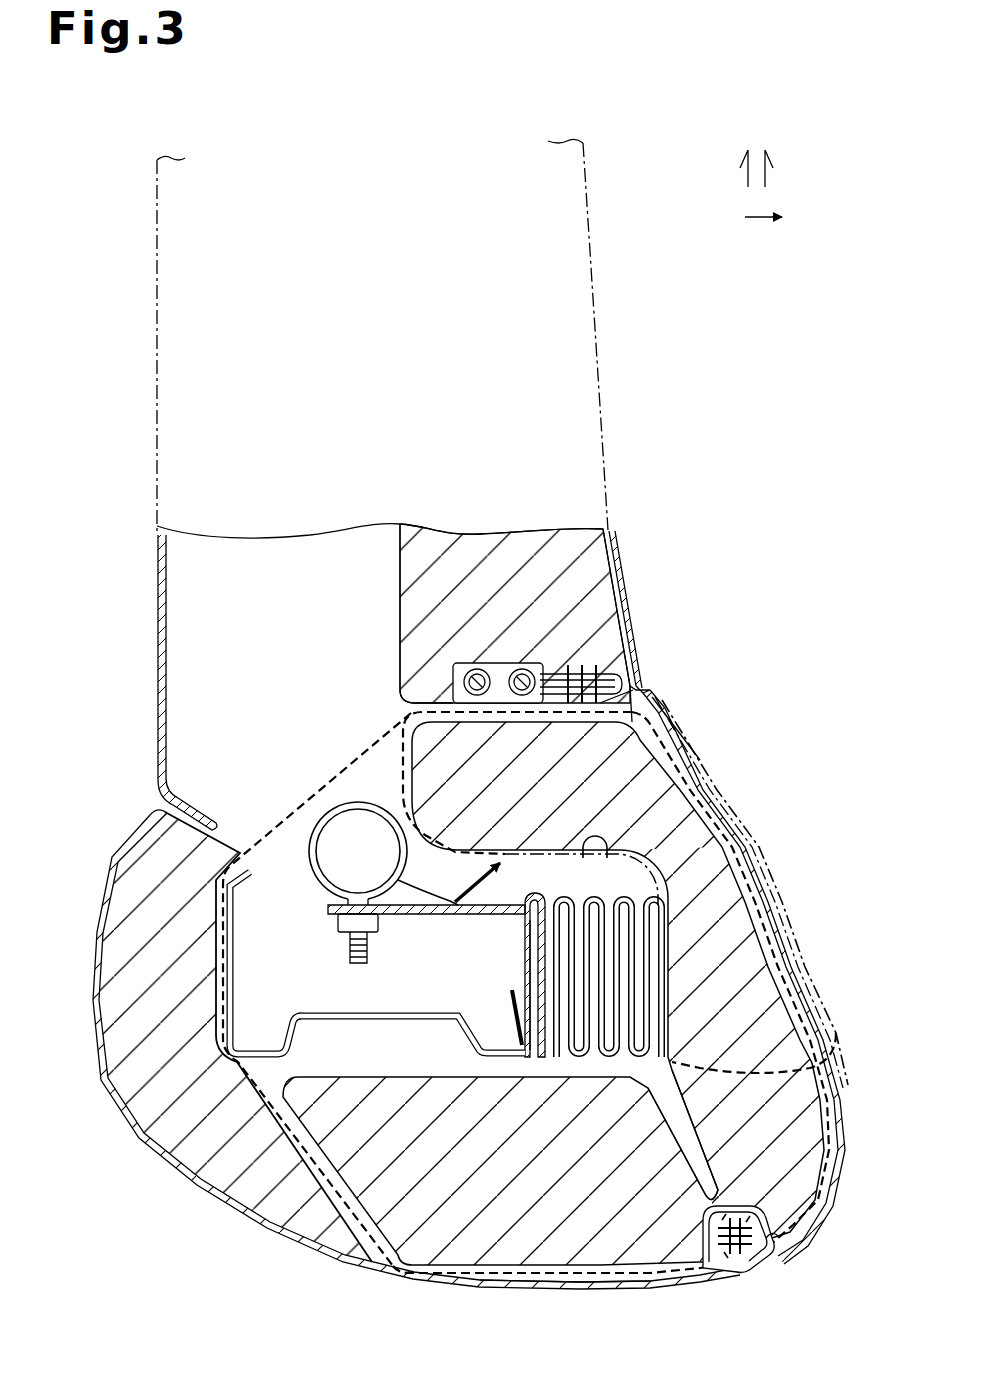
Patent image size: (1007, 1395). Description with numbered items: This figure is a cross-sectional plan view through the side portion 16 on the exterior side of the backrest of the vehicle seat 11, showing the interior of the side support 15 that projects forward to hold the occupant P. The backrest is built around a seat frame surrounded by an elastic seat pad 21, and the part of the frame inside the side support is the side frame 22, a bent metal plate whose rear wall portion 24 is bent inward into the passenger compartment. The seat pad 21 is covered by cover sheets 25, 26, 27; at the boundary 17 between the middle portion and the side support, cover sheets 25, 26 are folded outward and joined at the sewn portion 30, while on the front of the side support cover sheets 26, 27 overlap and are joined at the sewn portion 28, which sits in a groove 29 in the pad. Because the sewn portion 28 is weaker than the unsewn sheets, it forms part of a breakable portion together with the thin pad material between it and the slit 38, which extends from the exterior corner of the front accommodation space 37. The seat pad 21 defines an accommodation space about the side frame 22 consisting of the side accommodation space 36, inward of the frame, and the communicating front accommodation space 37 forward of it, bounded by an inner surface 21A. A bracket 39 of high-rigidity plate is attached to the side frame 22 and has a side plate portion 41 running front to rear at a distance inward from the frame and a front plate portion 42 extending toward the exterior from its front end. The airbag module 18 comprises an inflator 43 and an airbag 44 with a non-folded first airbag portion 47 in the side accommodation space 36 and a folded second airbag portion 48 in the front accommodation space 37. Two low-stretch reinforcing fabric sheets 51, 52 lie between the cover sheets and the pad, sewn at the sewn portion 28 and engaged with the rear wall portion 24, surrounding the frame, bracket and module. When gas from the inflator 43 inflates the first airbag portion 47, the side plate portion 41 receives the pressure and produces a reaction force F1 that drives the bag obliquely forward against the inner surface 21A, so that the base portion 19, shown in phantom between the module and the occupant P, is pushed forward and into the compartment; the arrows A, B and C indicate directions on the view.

The vehicle seat 11 is at (597, 400).
The side support 15 is at (790, 967).
The side portion 16 is at (137, 877).
The boundary 17 is at (657, 688).
The airbag module 18 is at (384, 779).
The base portion 19 is at (692, 728).
The seat pad 21 is at (625, 590).
The inner surface 21A is at (595, 838).
The side frame 22 is at (404, 1022).
The rear wall portion 24 is at (235, 980).
The cover sheet 25 is at (618, 544).
The cover sheet 26 is at (735, 807).
The cover sheet 27 is at (570, 1291).
The sewn portion 28 is at (752, 1280).
The groove 29 is at (770, 1244).
The sewn portion 30 is at (618, 672).
The side accommodation space 36 is at (385, 983).
The front accommodation space 37 is at (610, 876).
The slit 38 is at (656, 1165).
The bracket 39 is at (328, 907).
The side plate portion 41 is at (420, 916).
The front plate portion 42 is at (523, 963).
The inflator 43 is at (335, 822).
The airbag 44 is at (528, 890).
The first airbag portion 47 is at (448, 890).
The second airbag portion 48 is at (670, 992).
The reinforcing fabric sheet 51 is at (758, 870).
The reinforcing fabric sheet 52 is at (452, 1275).
The direction A is at (744, 170).
The direction B is at (770, 170).
The direction C is at (765, 220).
The occupant P is at (717, 790).
The reaction force F1 is at (455, 848).